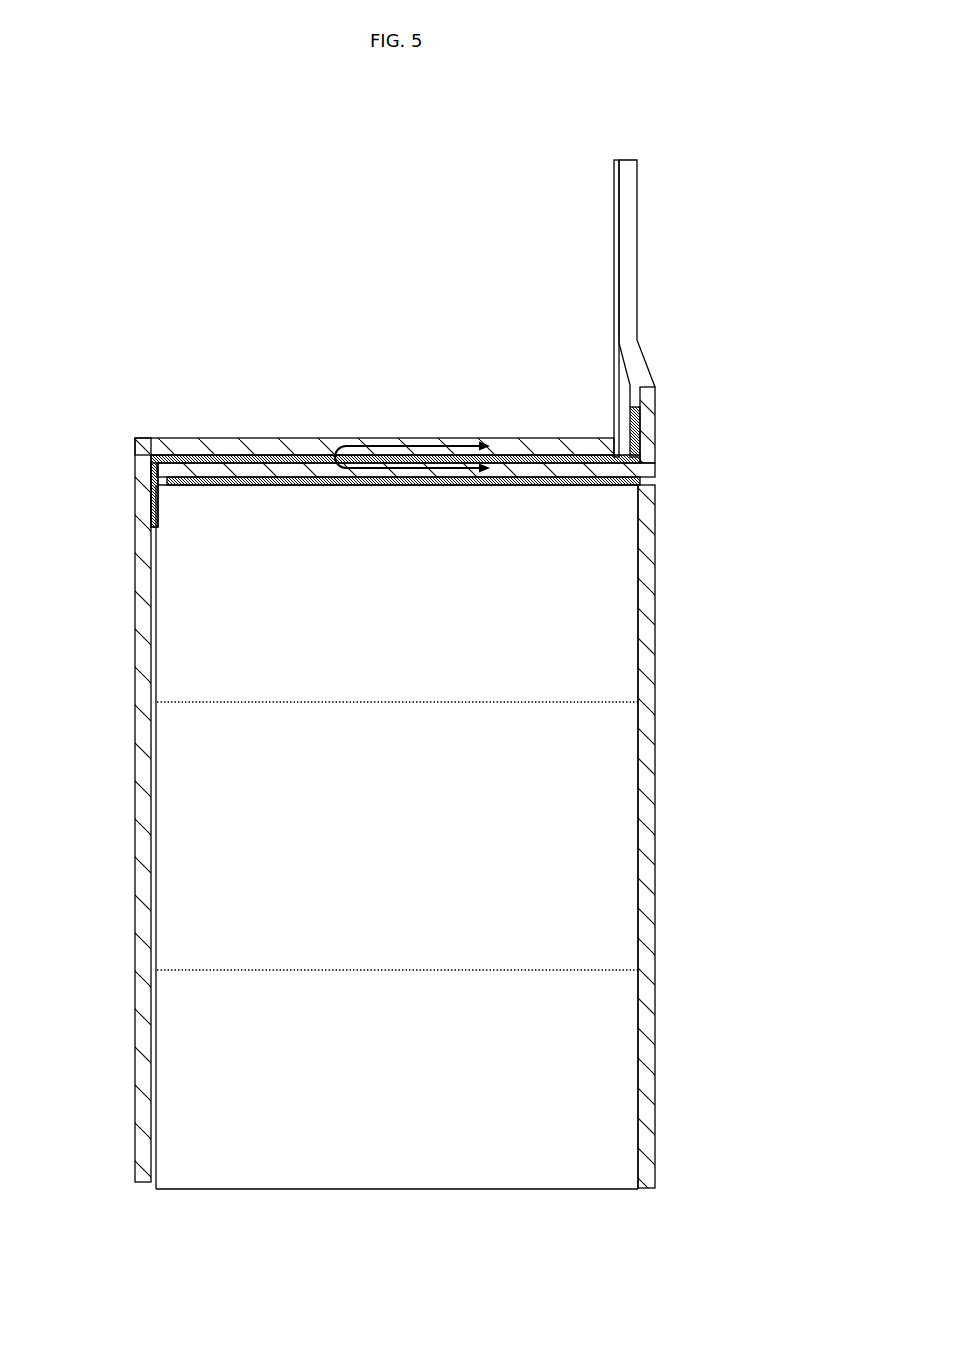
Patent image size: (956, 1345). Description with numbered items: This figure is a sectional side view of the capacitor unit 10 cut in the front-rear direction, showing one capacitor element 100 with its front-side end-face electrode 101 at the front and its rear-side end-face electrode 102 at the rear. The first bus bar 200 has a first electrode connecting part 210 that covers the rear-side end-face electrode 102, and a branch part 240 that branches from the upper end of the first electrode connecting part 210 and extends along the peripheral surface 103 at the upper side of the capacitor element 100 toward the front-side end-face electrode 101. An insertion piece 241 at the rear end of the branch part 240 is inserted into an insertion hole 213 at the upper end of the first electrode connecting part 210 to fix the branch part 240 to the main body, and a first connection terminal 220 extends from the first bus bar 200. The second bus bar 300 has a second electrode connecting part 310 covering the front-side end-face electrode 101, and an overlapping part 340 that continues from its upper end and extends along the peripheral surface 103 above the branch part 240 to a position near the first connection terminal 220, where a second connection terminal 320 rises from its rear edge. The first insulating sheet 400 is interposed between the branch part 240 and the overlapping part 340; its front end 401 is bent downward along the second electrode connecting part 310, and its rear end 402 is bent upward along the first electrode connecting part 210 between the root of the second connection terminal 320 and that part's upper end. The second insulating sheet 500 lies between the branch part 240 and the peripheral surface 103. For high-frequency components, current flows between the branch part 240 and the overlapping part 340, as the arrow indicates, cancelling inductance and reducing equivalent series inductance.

The capacitor unit 10 is at (165, 238).
The capacitor element 100 is at (302, 1193).
The front-side end-face electrode 101 is at (140, 905).
The rear-side end-face electrode 102 is at (648, 908).
The peripheral surface 103 is at (505, 490).
The first bus bar 200 is at (667, 675).
The first electrode connecting part 210 is at (655, 830).
The insertion hole 213 is at (655, 488).
The first connection terminal 220 is at (638, 268).
The branch part 240 is at (283, 487).
The insertion piece 241 is at (654, 464).
The second bus bar 300 is at (120, 690).
The second electrode connecting part 310 is at (135, 820).
The second connection terminal 320 is at (613, 317).
The overlapping part 340 is at (300, 440).
The first insulating sheet 400 is at (228, 458).
The front end 401 is at (148, 497).
The rear end 402 is at (639, 438).
The second insulating sheet 500 is at (355, 487).